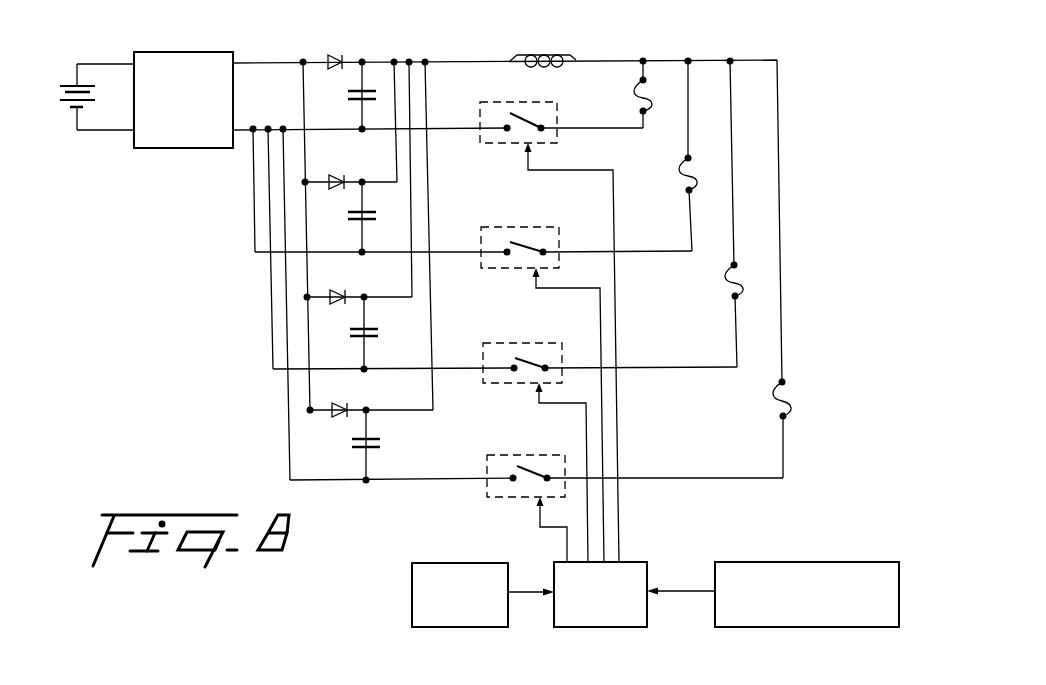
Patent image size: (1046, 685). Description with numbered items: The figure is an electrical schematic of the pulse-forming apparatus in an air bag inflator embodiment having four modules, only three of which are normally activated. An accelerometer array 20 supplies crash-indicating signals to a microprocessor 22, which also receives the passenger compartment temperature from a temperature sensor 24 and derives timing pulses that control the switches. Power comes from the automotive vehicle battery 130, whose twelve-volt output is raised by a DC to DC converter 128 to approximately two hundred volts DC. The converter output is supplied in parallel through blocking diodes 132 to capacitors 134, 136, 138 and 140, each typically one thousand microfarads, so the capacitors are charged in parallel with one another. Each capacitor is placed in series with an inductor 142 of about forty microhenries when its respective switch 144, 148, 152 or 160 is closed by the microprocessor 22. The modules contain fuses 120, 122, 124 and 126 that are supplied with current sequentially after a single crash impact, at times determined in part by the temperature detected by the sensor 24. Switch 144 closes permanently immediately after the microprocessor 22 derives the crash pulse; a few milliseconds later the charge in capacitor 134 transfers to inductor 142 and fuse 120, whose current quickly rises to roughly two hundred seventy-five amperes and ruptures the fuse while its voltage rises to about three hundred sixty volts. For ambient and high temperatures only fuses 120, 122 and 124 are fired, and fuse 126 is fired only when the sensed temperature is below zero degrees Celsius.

The accelerometer array 20 is at (834, 564).
The microprocessor 22 is at (626, 564).
The temperature sensor 24 is at (461, 564).
The fuse 120 is at (633, 90).
The fuse 122 is at (680, 173).
The fuse 124 is at (725, 282).
The fuse 126 is at (772, 403).
The DC to DC converter 128 is at (201, 59).
The automotive vehicle battery 130 is at (56, 107).
The blocking diodes 132 is at (340, 53).
The capacitor 134 is at (347, 95).
The capacitor 136 is at (352, 217).
The capacitor 138 is at (378, 332).
The capacitor 140 is at (382, 443).
The inductor 142 is at (548, 50).
The switch 144 is at (528, 100).
The switch 148 is at (527, 223).
The switch 152 is at (510, 342).
The switch 160 is at (507, 453).